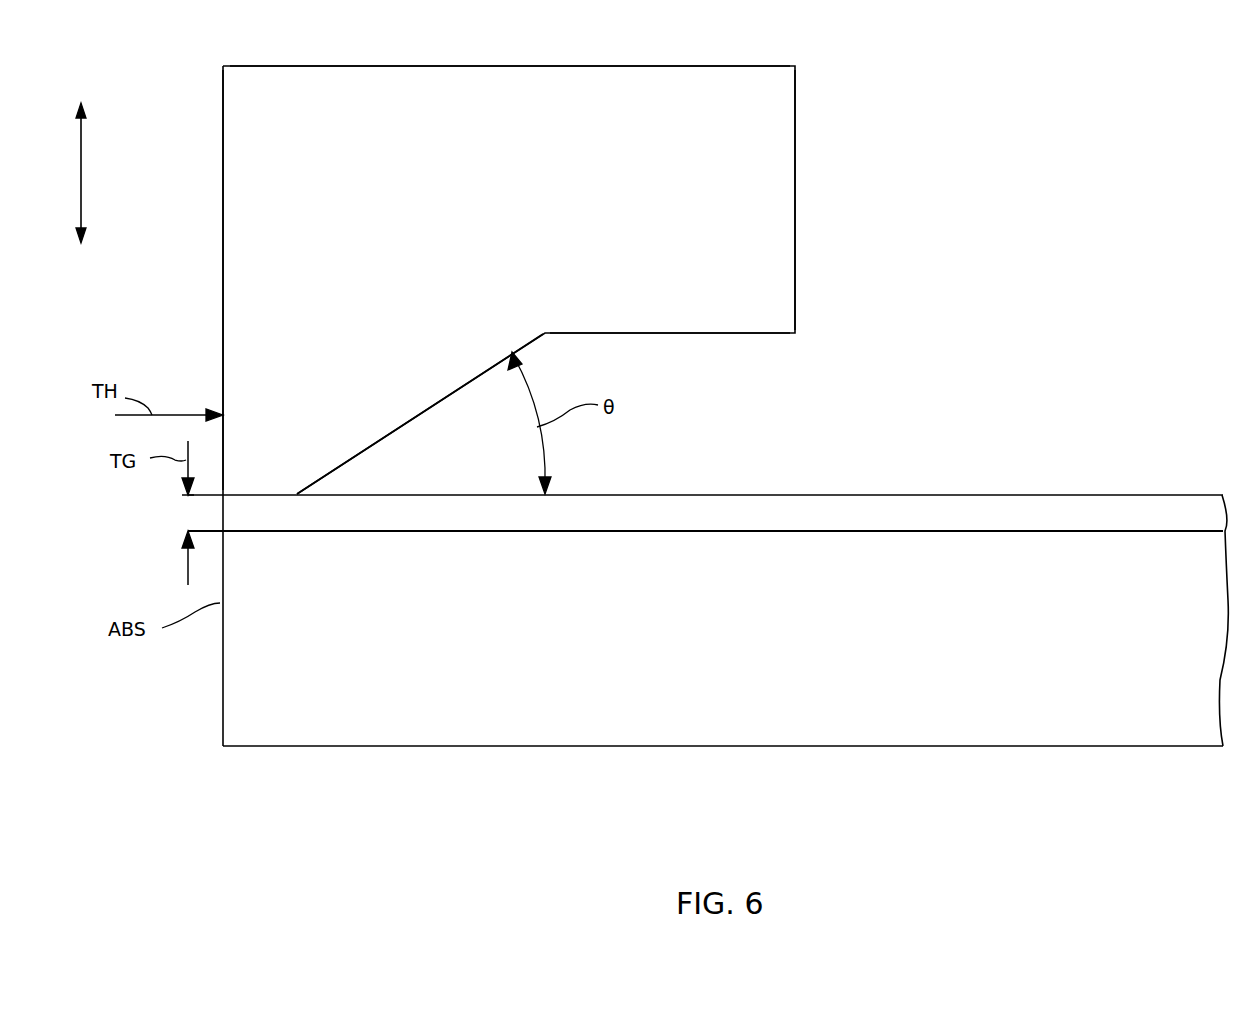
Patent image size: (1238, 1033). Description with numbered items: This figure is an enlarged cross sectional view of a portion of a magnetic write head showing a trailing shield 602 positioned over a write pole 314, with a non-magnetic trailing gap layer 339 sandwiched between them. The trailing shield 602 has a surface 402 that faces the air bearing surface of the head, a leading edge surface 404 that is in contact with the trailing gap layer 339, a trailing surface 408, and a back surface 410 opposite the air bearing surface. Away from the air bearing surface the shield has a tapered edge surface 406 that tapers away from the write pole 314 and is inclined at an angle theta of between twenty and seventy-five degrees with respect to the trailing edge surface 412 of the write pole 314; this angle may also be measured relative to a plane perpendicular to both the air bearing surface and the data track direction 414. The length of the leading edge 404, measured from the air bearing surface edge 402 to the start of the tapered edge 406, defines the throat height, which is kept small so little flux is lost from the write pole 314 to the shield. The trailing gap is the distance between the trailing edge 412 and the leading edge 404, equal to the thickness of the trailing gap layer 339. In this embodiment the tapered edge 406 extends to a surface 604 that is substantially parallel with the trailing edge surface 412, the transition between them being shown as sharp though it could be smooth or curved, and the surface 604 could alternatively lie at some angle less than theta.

The write pole 314 is at (740, 640).
The trailing gap layer 339 is at (830, 512).
The ABS surface 402 is at (223, 236).
The leading edge surface 404 is at (260, 496).
The tapered edge surface 406 is at (403, 425).
The trailing surface 408 is at (402, 66).
The back surface 410 is at (795, 104).
The trailing edge surface 412 is at (957, 530).
The data track direction 414 is at (81, 150).
The trailing shield 602 is at (496, 212).
The surface 604 is at (645, 333).